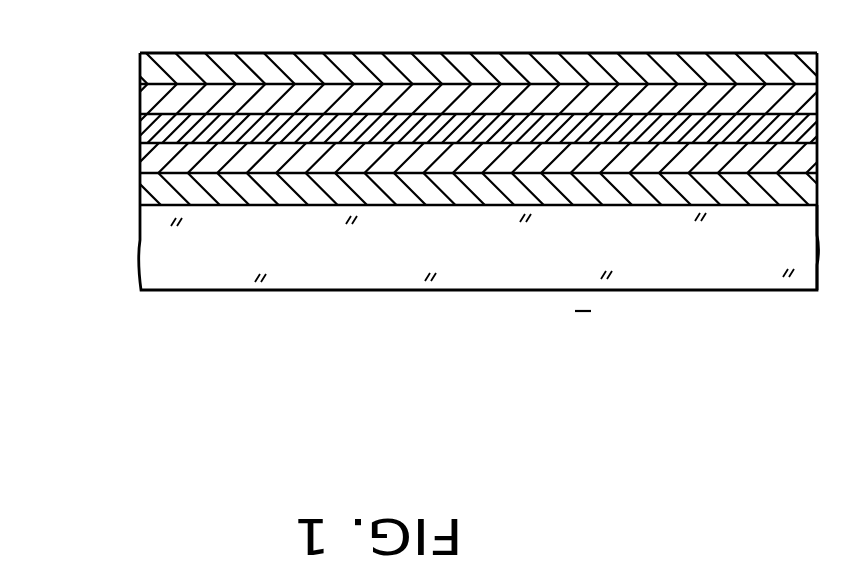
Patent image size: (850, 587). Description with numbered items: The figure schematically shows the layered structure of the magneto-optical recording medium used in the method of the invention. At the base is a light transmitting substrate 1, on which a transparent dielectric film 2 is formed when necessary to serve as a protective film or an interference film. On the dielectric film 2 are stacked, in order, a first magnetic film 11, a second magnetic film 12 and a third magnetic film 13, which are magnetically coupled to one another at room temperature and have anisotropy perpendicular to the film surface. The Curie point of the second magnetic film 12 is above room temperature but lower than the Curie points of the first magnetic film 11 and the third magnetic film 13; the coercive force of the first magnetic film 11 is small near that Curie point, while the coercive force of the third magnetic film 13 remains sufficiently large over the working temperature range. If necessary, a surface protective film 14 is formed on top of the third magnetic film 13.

The light transmitting substrate 1 is at (158, 243).
The transparent dielectric film 2 is at (146, 193).
The first magnetic film 11 is at (146, 163).
The second magnetic film 12 is at (146, 130).
The third magnetic film 13 is at (146, 100).
The surface protective film 14 is at (145, 68).